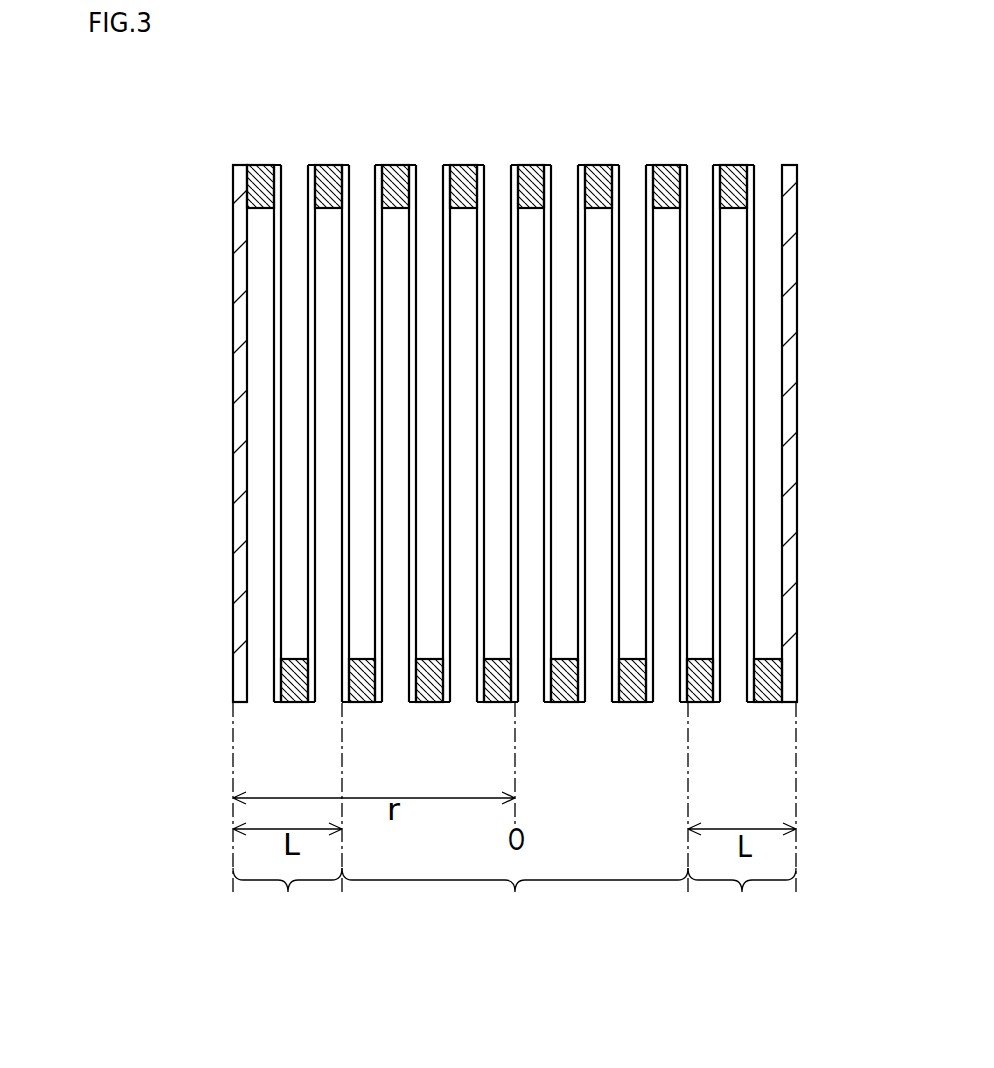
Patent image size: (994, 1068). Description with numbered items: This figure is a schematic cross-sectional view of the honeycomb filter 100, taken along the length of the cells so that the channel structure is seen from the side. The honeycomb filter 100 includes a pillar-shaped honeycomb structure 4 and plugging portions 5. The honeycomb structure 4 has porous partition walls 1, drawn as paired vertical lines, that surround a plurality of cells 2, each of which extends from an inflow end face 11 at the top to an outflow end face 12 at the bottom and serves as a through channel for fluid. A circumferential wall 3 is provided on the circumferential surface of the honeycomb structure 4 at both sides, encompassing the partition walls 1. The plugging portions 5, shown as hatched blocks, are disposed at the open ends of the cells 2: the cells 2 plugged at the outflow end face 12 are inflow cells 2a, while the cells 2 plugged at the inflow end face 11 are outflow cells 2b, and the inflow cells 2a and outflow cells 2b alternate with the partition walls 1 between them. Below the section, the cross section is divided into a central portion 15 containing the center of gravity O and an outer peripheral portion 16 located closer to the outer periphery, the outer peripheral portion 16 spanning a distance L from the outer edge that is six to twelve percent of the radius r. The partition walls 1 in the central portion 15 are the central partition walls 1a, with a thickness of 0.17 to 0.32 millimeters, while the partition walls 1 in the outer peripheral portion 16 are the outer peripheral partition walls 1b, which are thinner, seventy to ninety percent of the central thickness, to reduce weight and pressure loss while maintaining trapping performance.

The honeycomb filter 100 is at (857, 36).
The partition walls 1 is at (665, 391).
The central partition walls 1a is at (481, 186).
The outer peripheral partition walls 1b is at (752, 186).
The cells 2 is at (632, 421).
The inflow cells 2a is at (632, 197).
The outflow cells 2b is at (601, 665).
The circumferential wall 3 is at (241, 330).
The honeycomb structure 4 is at (812, 210).
The plugging portions 5 is at (404, 166).
The inflow end face 11 is at (232, 155).
The outflow end face 12 is at (294, 720).
The central portion 15 is at (515, 898).
The outer peripheral portion 16 is at (514, 898).